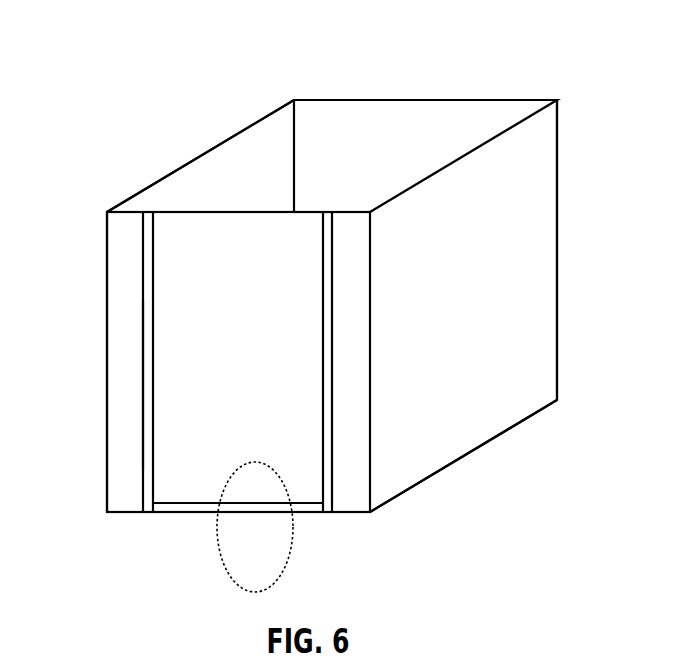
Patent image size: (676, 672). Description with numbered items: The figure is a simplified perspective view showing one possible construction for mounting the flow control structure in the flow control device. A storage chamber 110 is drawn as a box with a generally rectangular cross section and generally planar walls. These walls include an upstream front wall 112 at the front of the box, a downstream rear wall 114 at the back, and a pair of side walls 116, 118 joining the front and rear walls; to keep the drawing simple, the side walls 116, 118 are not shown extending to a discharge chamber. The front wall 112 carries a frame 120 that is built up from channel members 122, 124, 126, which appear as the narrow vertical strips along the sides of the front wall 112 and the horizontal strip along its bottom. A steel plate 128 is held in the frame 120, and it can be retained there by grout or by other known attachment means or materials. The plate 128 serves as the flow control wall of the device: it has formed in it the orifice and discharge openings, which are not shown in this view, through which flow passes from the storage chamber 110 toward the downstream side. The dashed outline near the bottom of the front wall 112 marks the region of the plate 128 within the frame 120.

The storage chamber 110 is at (124, 104).
The upstream front wall 112 is at (123, 288).
The downstream rear wall 114 is at (425, 128).
The side wall 116 is at (227, 155).
The side wall 118 is at (500, 410).
The frame 120 is at (130, 457).
The channel member 122 is at (145, 382).
The channel member 124 is at (202, 512).
The channel member 126 is at (332, 487).
The steel plate 128 is at (257, 473).